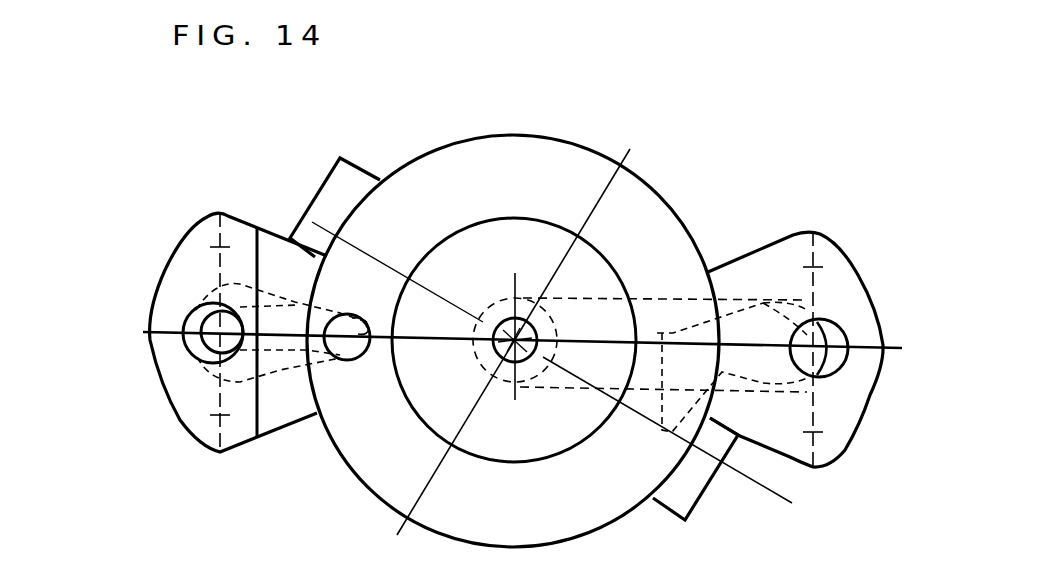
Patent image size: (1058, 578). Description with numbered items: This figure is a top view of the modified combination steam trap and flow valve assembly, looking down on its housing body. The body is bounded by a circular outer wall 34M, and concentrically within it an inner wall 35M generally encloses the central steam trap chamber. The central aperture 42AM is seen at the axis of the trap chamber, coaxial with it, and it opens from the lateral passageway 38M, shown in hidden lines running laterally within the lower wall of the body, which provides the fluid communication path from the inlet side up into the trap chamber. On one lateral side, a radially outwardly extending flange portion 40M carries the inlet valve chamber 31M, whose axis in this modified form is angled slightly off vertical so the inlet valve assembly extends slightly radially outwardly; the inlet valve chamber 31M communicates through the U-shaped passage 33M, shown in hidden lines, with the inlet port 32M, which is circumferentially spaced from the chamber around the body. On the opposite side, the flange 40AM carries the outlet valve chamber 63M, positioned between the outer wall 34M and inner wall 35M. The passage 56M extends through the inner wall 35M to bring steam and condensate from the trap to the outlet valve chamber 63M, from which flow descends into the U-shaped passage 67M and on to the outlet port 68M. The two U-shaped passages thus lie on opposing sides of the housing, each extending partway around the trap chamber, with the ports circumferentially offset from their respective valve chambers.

The inlet valve chamber 31M is at (830, 332).
The inlet port 32M is at (700, 502).
The U-shaped passage 33M is at (625, 398).
The outer wall 34M is at (438, 147).
The inner wall 35M is at (393, 352).
The lateral passageway 38M is at (563, 300).
The flange portion 40M is at (843, 392).
The flange 40AM is at (187, 398).
The aperture 42AM is at (502, 318).
The passage 56M is at (347, 337).
The outlet valve chamber 63M is at (200, 320).
The U-shaped passage 67M is at (292, 248).
The outlet port 68M is at (322, 187).